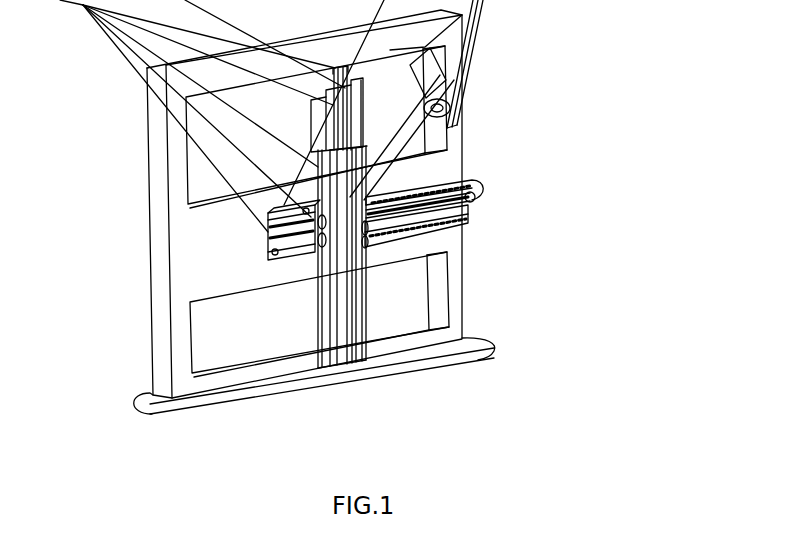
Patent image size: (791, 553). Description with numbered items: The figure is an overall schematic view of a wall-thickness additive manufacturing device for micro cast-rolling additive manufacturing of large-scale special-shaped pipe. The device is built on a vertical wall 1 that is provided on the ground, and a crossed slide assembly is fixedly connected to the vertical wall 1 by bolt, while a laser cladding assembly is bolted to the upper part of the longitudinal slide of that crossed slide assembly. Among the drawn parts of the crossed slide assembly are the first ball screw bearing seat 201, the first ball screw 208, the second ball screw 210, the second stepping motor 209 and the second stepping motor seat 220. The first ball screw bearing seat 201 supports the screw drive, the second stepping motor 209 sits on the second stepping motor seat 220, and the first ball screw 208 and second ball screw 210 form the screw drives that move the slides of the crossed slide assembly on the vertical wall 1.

The vertical wall 1 is at (167, 391).
The first ball screw bearing seat 201 is at (352, 370).
The first ball screw 208 is at (400, 362).
The second stepping motor 209 is at (475, 200).
The second stepping motor seat 220 is at (470, 210).
The second ball screw 210 is at (470, 222).